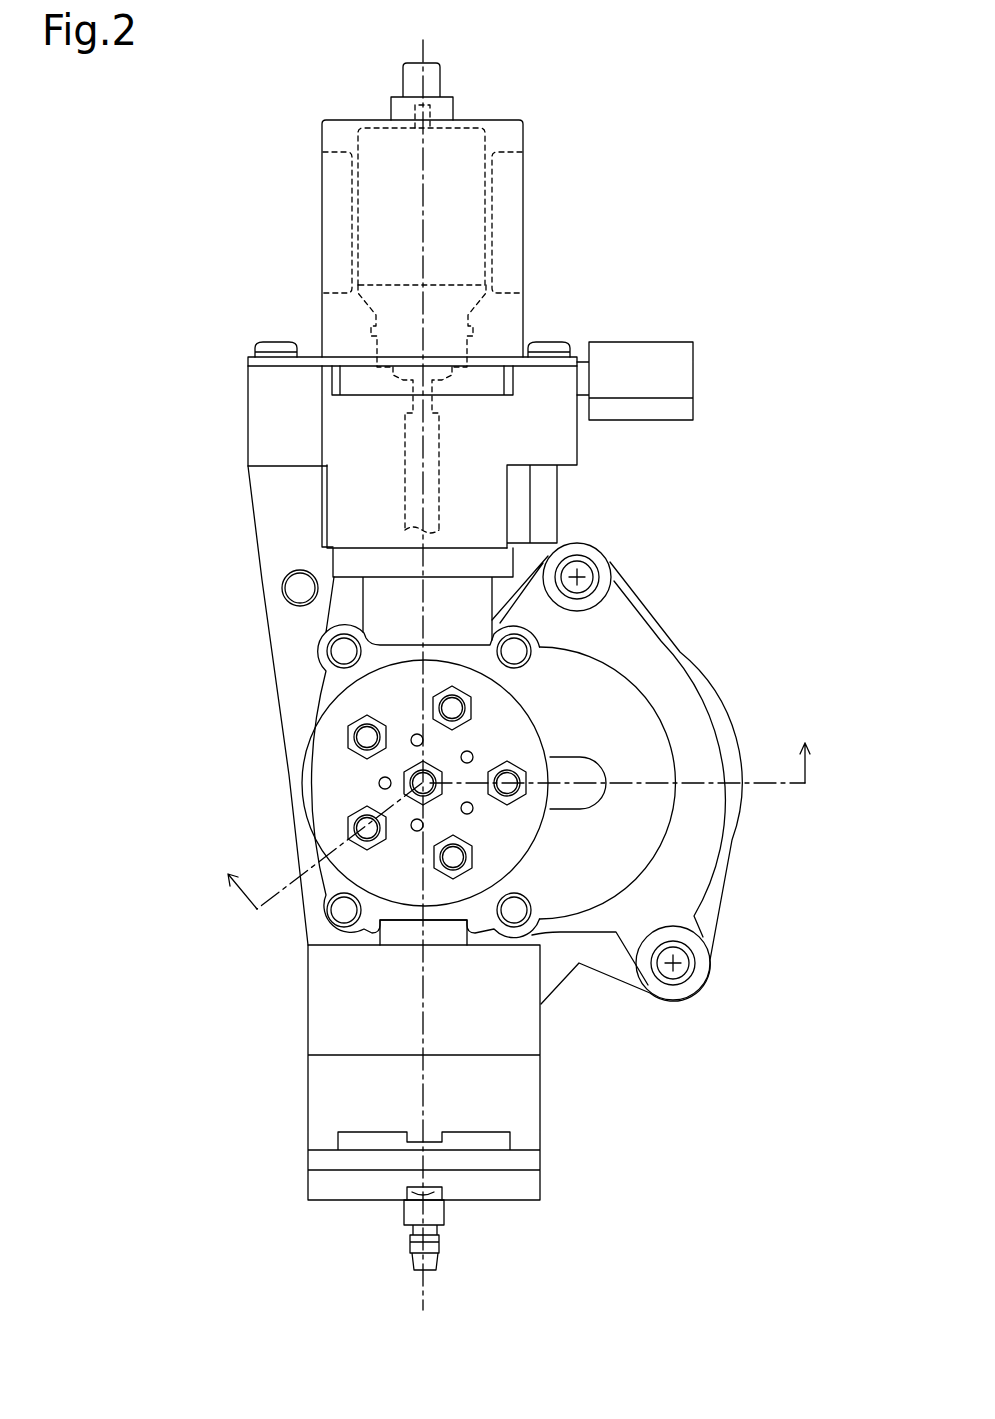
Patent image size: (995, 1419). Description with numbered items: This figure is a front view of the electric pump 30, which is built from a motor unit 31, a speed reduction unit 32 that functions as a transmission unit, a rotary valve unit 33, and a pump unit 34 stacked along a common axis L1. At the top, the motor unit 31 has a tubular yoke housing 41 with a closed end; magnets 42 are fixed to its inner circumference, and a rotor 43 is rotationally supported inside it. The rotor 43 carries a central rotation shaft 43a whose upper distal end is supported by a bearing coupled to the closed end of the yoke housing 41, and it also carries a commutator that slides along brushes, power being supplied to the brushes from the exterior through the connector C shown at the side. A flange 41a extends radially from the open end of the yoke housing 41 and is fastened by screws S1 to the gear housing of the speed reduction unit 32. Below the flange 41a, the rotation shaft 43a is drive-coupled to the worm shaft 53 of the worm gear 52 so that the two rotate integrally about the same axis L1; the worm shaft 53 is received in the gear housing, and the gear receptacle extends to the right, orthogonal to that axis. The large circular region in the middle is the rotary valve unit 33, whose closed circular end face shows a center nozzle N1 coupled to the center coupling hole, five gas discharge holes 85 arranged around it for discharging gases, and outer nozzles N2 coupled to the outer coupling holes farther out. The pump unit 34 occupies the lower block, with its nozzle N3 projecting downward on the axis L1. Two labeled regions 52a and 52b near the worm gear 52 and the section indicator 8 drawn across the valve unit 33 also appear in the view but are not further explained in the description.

The electric pump 30 is at (158, 145).
The motor unit 31 is at (496, 118).
The yoke housing 41 is at (523, 140).
The flange 41a is at (548, 356).
The magnets 42 is at (322, 221).
The rotor 43 is at (383, 117).
The rotation shaft 43a is at (408, 400).
The screws S1 is at (280, 341).
The connector C is at (670, 341).
The speed reduction unit 32 is at (412, 498).
The worm shaft 53 is at (442, 442).
The worm gear 52 is at (277, 525).
The recess of housing 52a is at (383, 608).
The gear cover portion of housing 52b is at (706, 917).
The rotary valve unit 33 is at (318, 770).
The gas discharge holes 85 is at (379, 783).
The nozzle N1 is at (438, 800).
The nozzles N2 is at (349, 737).
The nozzle N3 is at (444, 1228).
The pump unit 34 is at (541, 1110).
The axis L1 is at (432, 1293).
The section line VIII-VIII 8 is at (510, 810).